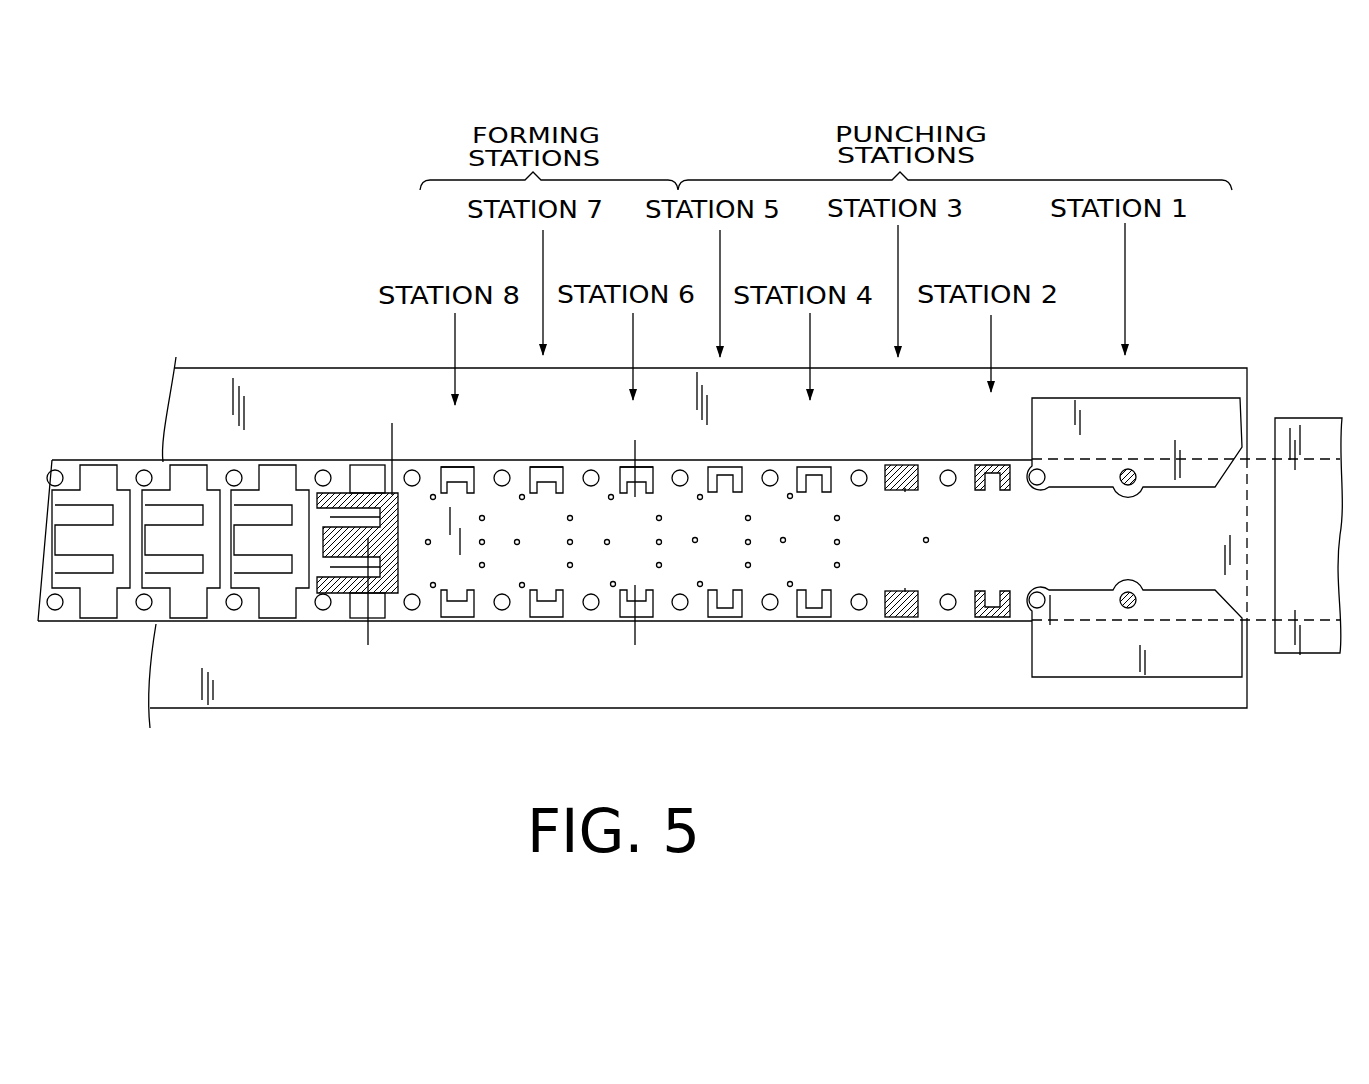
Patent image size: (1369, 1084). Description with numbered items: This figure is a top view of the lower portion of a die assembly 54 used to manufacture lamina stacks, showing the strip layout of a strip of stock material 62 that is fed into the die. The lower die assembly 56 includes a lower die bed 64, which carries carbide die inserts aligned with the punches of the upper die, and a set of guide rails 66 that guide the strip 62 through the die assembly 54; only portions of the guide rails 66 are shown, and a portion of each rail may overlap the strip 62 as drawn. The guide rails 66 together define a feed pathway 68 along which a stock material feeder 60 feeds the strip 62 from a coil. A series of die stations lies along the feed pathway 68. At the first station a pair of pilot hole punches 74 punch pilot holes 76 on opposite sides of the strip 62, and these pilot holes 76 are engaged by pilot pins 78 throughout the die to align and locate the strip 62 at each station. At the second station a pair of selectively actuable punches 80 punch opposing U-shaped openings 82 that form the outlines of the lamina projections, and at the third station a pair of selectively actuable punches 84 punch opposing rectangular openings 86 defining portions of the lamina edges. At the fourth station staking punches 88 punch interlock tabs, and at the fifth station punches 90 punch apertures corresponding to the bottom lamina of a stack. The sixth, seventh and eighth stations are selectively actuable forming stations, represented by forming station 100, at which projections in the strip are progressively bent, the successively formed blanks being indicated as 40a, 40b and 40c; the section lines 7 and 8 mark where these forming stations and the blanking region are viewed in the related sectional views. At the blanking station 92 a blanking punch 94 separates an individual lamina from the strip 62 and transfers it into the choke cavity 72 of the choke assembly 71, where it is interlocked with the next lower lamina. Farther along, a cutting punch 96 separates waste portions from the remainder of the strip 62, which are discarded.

The die assembly 54 is at (1302, 203).
The lower die assembly 56 is at (698, 561).
The lower die bed 64 is at (1072, 708).
The stock material feeder 60 is at (1317, 430).
The strip of stock material 62 is at (1218, 548).
The guide rails 66 is at (1200, 412).
The feed pathway 68 is at (1192, 558).
The choke assembly 71 is at (315, 657).
The choke cavity 72 is at (306, 463).
The pilot hole punches 74 is at (1131, 468).
The pilot holes 76 is at (1128, 486).
The pilot pins 78 is at (1037, 486).
The selectively actuable punches 80 is at (990, 462).
The U-shaped openings 82 is at (826, 463).
The selectively actuable punches 84 is at (902, 462).
The rectangular openings 86 is at (906, 491).
The staking punches 88 is at (839, 518).
The selectively actuable punches 90 is at (746, 540).
The blanking station 92 is at (329, 483).
The blanking punch 94 is at (392, 598).
The cutting punch 96 is at (353, 613).
The selectively actuable forming station 100 is at (605, 446).
The contact blank, first forming stage 40a is at (453, 622).
The contact blank, second forming stage 40b is at (550, 616).
The contact blank, third forming stage 40c is at (624, 618).
The section line 7- 7 is at (635, 442).
The section line 8- 8 is at (392, 430).